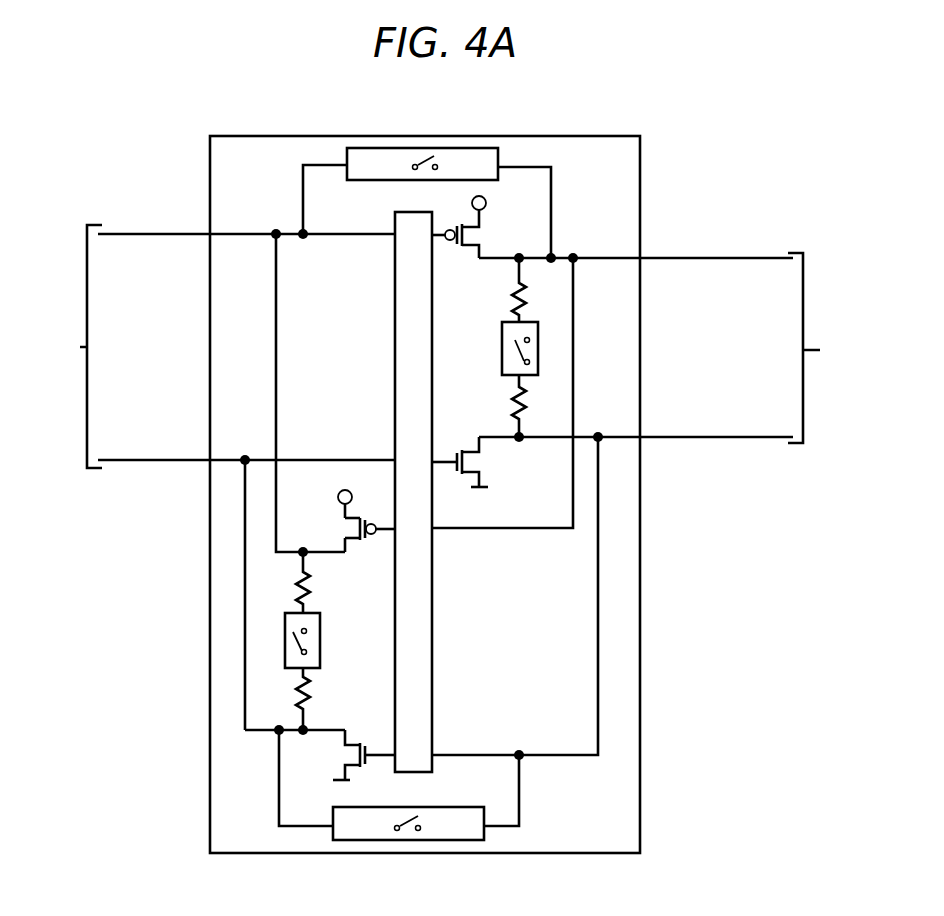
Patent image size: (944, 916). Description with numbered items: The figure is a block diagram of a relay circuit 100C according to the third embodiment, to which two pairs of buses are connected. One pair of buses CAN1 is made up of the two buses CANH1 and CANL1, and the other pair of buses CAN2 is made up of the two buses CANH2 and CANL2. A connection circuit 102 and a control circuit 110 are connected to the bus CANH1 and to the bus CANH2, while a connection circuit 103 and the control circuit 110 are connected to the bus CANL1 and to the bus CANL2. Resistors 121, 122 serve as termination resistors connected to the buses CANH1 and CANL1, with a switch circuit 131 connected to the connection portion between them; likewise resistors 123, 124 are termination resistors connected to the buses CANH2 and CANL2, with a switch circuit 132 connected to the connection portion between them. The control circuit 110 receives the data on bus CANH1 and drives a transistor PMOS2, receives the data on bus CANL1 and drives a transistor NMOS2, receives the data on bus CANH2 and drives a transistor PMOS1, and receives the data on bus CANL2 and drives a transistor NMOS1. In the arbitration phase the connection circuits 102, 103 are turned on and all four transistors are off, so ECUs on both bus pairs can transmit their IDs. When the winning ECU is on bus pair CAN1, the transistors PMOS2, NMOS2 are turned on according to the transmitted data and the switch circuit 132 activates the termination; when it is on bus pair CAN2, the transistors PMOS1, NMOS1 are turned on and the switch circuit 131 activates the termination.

The relay circuit 100C is at (433, 136).
The connection circuit 102 is at (498, 138).
The connection circuit 103 is at (484, 815).
The control circuit 110 is at (393, 282).
The resistor 121 is at (312, 577).
The resistor 122 is at (312, 690).
The resistor 123 is at (513, 295).
The resistor 124 is at (513, 395).
The switch circuit 131 is at (318, 640).
The switch circuit 132 is at (500, 348).
The transistor PMOS1 is at (340, 515).
The transistor PMOS2 is at (488, 230).
The transistor NMOS1 is at (332, 760).
The transistor NMOS2 is at (493, 480).
The bus CANH1 is at (195, 232).
The bus CANL1 is at (195, 458).
The bus CANH2 is at (675, 258).
The bus CANL2 is at (675, 436).
The pair of buses CAN1 is at (71, 346).
The pair of buses CAN2 is at (821, 348).